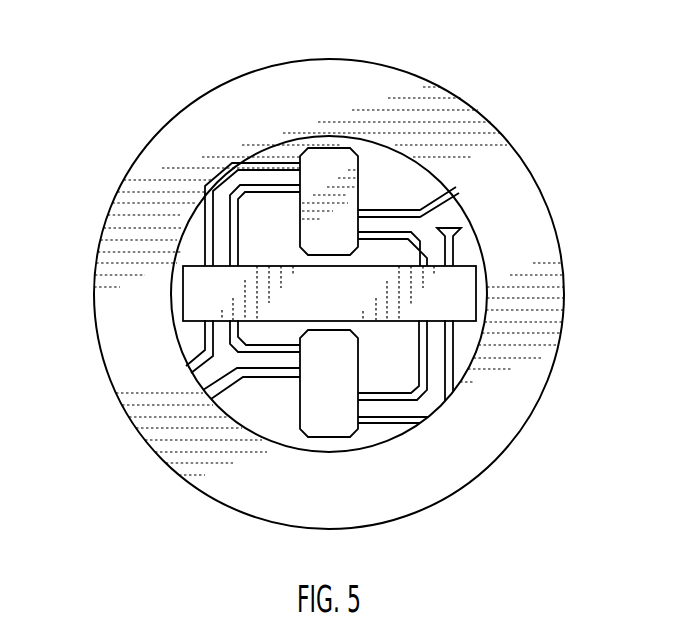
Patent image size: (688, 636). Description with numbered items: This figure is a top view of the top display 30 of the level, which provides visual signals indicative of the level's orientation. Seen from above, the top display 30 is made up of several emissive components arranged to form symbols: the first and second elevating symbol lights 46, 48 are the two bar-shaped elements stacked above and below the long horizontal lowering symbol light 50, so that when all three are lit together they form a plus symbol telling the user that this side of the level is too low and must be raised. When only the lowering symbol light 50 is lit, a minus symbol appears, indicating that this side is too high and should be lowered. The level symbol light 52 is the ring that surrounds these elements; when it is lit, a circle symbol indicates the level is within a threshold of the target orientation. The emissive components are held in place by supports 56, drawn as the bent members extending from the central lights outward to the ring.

The top display 30 is at (178, 112).
The first elevating symbol light 46 is at (328, 165).
The second elevating symbol light 48 is at (340, 425).
The lowering symbol light 50 is at (376, 272).
The level symbol light 52 is at (228, 492).
The supports 56 is at (260, 359).